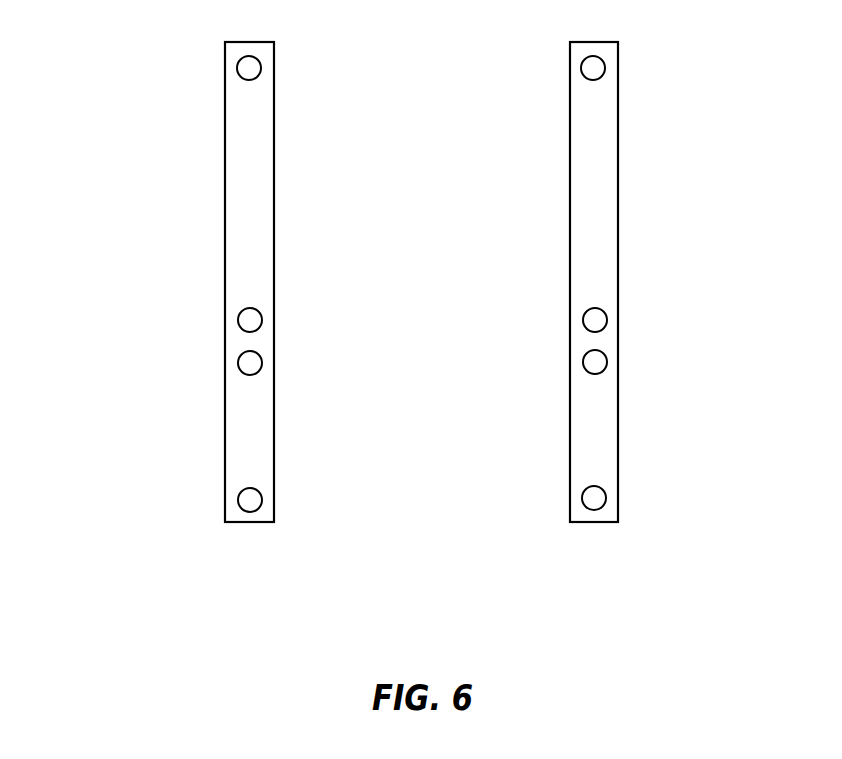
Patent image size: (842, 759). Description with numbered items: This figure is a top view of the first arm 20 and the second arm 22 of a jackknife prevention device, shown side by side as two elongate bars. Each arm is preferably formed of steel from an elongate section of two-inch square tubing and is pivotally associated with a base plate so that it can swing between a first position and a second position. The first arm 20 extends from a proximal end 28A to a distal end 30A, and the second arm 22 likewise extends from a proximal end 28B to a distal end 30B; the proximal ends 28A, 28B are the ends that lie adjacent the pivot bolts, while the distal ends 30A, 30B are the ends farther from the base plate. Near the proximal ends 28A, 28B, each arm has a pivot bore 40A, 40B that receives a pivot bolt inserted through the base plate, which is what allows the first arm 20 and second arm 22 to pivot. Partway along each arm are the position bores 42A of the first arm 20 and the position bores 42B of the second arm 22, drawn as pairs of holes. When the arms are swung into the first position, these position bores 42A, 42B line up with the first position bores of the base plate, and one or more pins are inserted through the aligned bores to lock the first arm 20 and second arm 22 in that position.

The first arm 20 is at (210, 198).
The second arm 22 is at (627, 211).
The distal end 30A is at (225, 47).
The distal end 30B is at (618, 47).
The position bores 42A is at (238, 358).
The position bores 42B is at (583, 358).
The pivot bore 40A is at (262, 497).
The pivot bore 40B is at (605, 492).
The proximal end 28A is at (225, 520).
The proximal end 28B is at (618, 508).